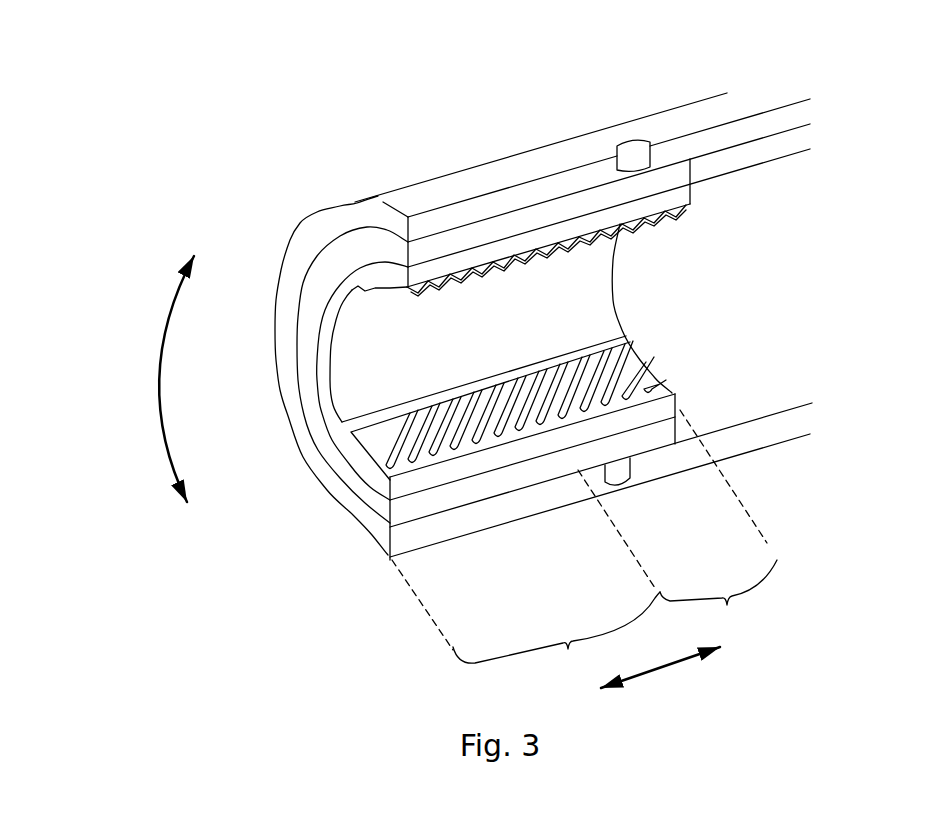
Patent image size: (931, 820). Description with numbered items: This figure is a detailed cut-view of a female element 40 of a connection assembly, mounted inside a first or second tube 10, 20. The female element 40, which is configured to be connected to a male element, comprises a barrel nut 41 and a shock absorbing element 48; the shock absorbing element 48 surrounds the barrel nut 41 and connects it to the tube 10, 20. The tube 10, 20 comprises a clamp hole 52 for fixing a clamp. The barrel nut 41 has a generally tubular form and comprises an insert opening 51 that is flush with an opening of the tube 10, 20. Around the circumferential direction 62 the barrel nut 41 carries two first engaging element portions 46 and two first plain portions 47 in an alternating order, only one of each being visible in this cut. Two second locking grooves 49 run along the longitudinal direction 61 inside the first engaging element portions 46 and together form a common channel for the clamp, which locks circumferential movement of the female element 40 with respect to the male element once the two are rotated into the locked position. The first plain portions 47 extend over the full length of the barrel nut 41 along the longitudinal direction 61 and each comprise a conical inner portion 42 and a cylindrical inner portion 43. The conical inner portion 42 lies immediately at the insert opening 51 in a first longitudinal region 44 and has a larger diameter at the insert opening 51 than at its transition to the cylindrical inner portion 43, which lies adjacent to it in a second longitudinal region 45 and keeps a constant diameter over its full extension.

The first tube 10 is at (590, 103).
The second tube 20 is at (712, 93).
The female element 40 is at (277, 173).
The barrel nut 41 is at (384, 272).
The conical inner portion 42 is at (352, 372).
The cylindrical inner portion 43 is at (547, 339).
The first longitudinal region 44 is at (526, 576).
The second longitudinal region 45 is at (718, 521).
The first engaging element portions 46 is at (432, 447).
The first plain portions 47 is at (473, 312).
The shock absorbing element 48 is at (550, 215).
The second locking grooves 49 is at (490, 260).
The insert opening 51 is at (327, 340).
The clamp hole 52 is at (618, 132).
The longitudinal direction 61 is at (675, 668).
The circumferential direction 62 is at (150, 368).